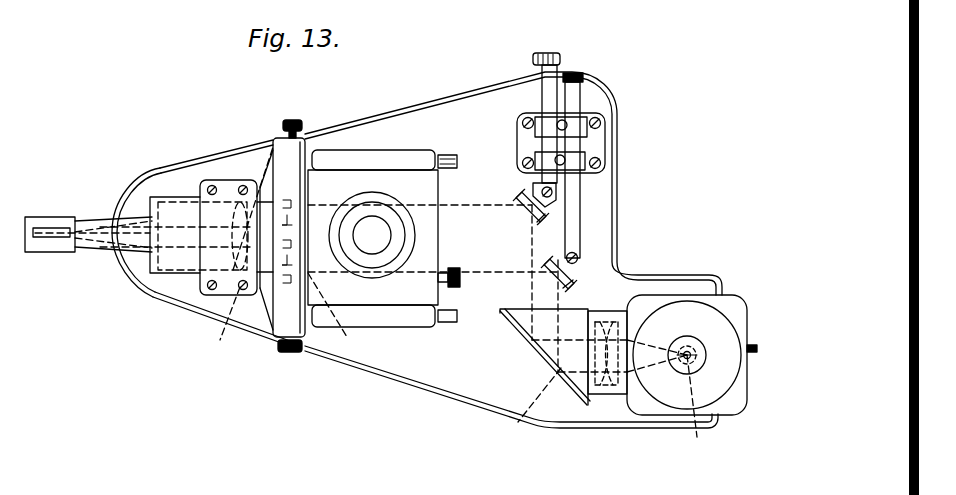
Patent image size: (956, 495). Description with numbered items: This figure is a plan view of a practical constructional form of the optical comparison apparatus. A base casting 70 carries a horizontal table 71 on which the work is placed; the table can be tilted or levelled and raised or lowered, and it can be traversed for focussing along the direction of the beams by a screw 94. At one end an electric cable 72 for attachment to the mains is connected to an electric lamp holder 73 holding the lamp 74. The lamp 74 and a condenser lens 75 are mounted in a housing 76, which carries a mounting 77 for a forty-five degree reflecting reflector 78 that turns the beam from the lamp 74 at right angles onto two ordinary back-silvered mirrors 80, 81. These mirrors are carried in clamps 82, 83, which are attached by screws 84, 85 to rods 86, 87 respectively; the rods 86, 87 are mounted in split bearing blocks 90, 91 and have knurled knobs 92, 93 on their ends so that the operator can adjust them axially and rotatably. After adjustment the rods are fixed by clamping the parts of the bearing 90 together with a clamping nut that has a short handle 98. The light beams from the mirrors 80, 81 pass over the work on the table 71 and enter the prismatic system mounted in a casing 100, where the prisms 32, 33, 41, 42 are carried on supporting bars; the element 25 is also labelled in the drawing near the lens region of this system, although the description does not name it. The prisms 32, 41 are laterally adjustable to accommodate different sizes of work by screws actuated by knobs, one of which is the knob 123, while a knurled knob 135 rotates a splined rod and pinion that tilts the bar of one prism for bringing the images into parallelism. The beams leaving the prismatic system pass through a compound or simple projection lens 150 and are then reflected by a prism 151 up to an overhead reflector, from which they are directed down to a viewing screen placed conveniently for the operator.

The objective lens 25 is at (382, 214).
The prism 32 is at (267, 155).
The prism 33 is at (218, 157).
The prism 41 is at (339, 317).
The prism 42 is at (222, 330).
The base casting 70 is at (423, 357).
The horizontal table 71 is at (360, 193).
The electric cable 72 is at (768, 334).
The electric lamp holder 73 is at (688, 409).
The lamp 74 is at (688, 337).
The condenser lens 75 is at (603, 395).
The housing 76 is at (730, 409).
The mounting 77 is at (508, 321).
The reflecting reflector 78 is at (528, 408).
The back-silvered mirror 80 is at (540, 217).
The back-silvered mirror 81 is at (569, 283).
The clamp 82 is at (524, 196).
The clamp 83 is at (573, 270).
The screw 84 is at (541, 191).
The screw 85 is at (578, 256).
The rod 86 is at (547, 93).
The rod 87 is at (582, 190).
The split bearing block 90 is at (577, 127).
The split bearing block 91 is at (582, 155).
The knurled knob 92 is at (542, 53).
The knurled knob 93 is at (575, 72).
The screw 94 is at (456, 268).
The short handle 98 is at (566, 122).
The casing 100 is at (286, 157).
The knob 123 is at (295, 121).
The knurled knob 135 is at (290, 353).
The projection lens 150 is at (193, 283).
The prism 151 is at (57, 238).